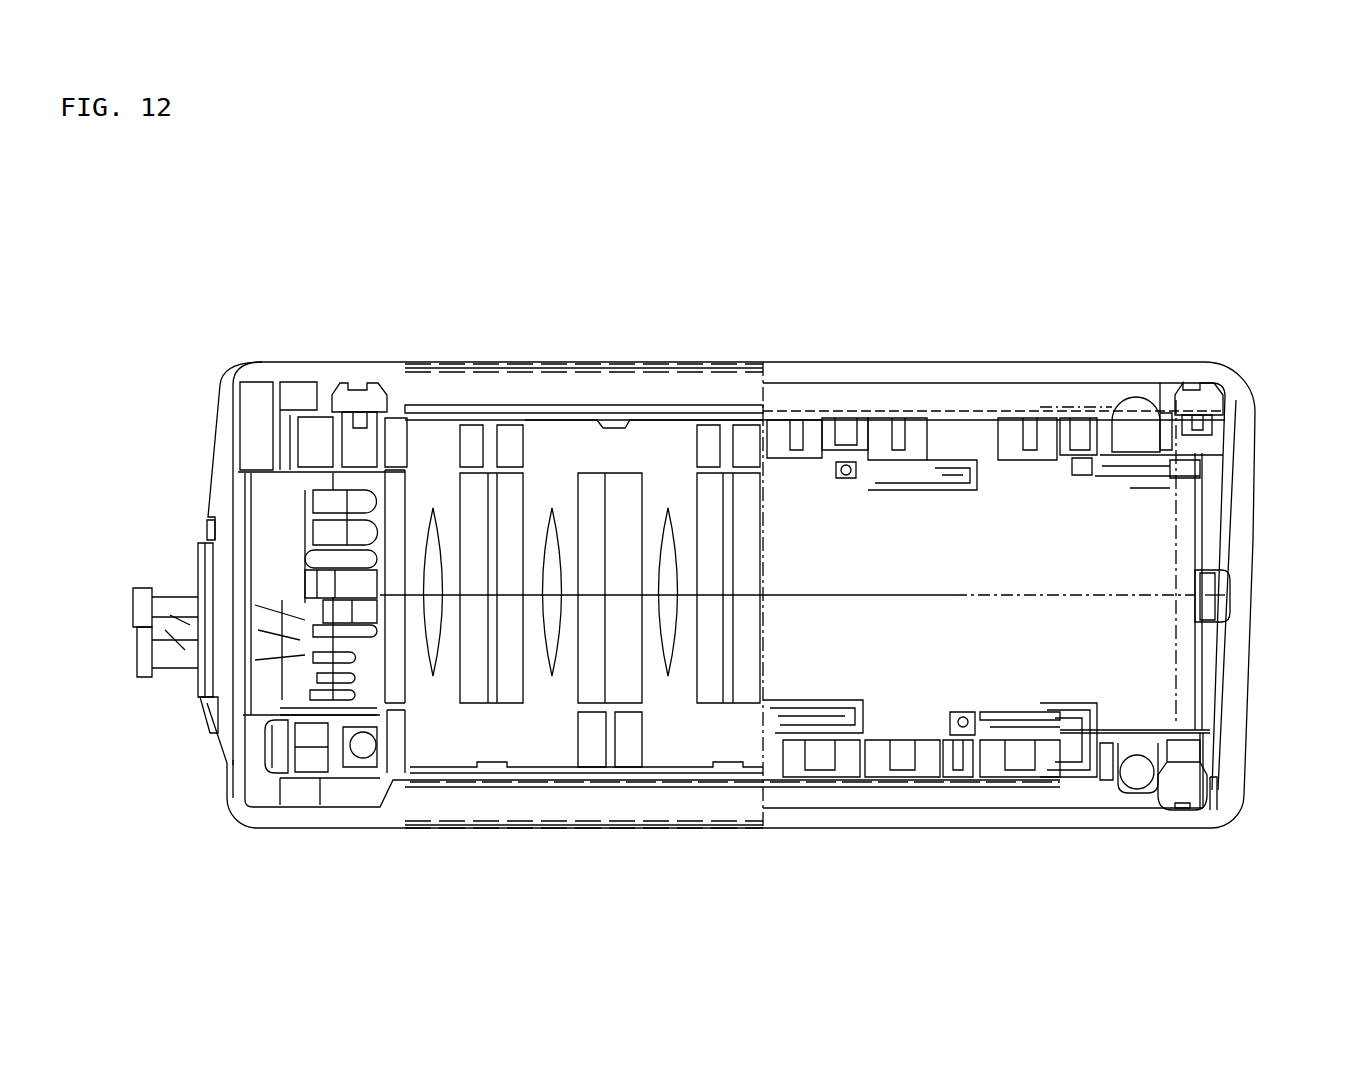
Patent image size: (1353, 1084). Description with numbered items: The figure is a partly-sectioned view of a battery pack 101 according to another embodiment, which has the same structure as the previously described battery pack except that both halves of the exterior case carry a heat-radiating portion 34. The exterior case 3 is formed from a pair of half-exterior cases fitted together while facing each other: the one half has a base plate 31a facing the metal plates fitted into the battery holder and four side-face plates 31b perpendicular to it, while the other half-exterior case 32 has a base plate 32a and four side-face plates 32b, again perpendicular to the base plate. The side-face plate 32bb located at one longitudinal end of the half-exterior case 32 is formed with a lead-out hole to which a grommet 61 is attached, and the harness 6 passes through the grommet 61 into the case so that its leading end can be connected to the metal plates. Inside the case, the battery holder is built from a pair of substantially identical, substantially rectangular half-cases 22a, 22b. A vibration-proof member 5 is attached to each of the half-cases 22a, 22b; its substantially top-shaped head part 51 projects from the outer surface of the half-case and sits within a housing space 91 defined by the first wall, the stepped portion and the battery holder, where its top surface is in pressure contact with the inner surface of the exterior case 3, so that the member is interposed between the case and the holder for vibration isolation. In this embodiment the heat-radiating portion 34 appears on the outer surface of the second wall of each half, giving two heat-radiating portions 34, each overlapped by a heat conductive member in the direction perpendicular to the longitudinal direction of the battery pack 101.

The battery pack 101 is at (327, 241).
The exterior case 3 is at (727, 552).
The base plate 31a is at (262, 375).
The side-face plates 31b is at (215, 467).
The half-exterior case 32 is at (739, 669).
The base plate 32a is at (358, 822).
The side-face plates 32b is at (1243, 630).
The side-face plate 32bb is at (227, 757).
The heat-radiating portion 34 is at (626, 362).
The vibration-proof member 5 is at (782, 590).
The head part 51 is at (360, 392).
The housing space 91 is at (383, 395).
The half-case 22a is at (828, 500).
The half-case 22b is at (810, 680).
The grommet 61 is at (200, 572).
The harness 6 is at (144, 683).